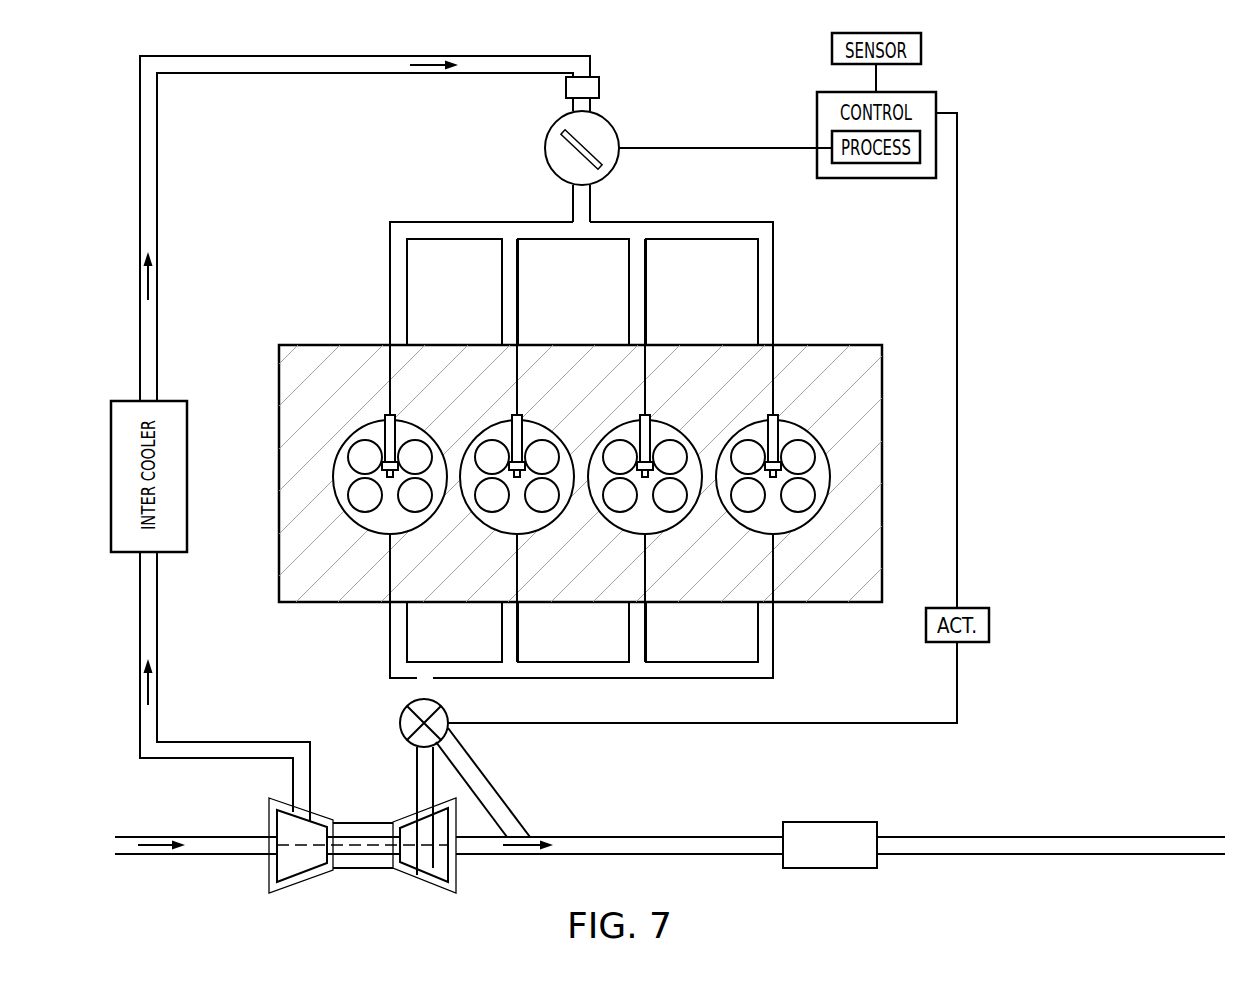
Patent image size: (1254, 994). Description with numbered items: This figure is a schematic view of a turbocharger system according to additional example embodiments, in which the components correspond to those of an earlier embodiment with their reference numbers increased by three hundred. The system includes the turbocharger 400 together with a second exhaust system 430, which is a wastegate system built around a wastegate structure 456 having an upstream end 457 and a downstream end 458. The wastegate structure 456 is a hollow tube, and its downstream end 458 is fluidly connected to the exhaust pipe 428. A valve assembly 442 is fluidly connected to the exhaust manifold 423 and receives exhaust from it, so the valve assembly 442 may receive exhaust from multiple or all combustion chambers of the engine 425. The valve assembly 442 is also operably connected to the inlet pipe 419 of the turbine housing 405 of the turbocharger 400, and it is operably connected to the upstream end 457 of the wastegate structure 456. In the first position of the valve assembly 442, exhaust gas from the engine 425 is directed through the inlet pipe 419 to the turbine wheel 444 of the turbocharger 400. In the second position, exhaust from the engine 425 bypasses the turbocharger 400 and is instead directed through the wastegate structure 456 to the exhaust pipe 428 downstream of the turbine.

The turbocharger 400 is at (263, 901).
The turbine housing 405 is at (443, 891).
The inlet pipe 419 is at (416, 786).
The exhaust manifold 423 is at (355, 660).
The engine 425 is at (874, 324).
The exhaust pipe 428 is at (700, 836).
The second exhaust system 430 is at (494, 758).
The valve assembly 442 is at (392, 724).
The turbine wheel 444 is at (442, 870).
The wastegate structure 456 is at (508, 789).
The upstream end 457 is at (472, 712).
The downstream end 458 is at (527, 833).